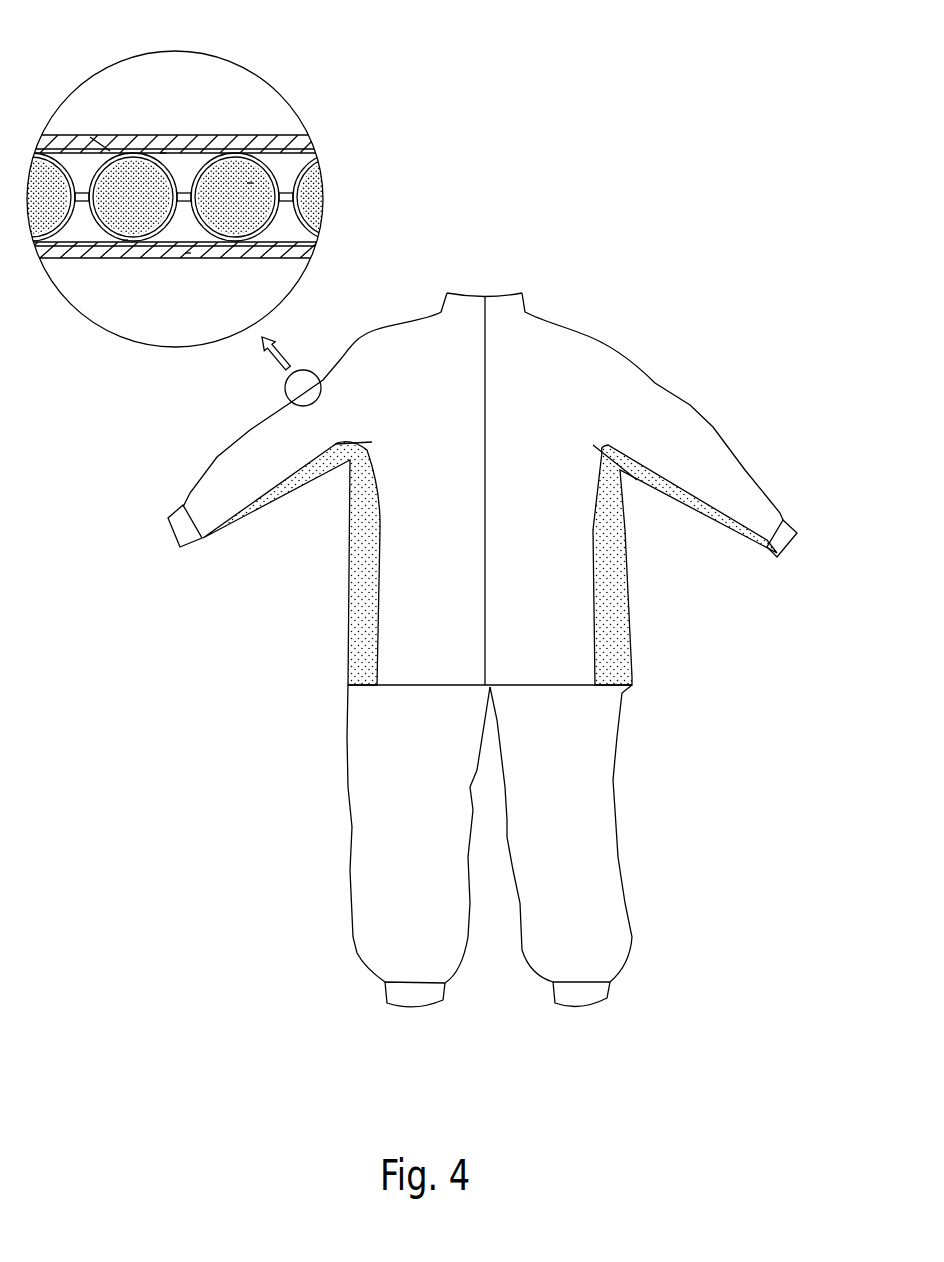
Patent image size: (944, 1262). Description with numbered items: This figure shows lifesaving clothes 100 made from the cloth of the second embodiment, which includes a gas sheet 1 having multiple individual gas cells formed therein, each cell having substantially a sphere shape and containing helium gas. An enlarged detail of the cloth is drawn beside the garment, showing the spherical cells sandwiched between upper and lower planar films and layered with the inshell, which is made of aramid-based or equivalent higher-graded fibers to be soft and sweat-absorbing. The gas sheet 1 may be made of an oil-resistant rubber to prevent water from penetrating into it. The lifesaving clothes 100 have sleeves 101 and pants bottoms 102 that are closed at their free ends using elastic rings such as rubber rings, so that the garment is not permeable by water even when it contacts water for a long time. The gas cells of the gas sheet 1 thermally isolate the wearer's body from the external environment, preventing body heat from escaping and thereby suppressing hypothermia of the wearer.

The lifesaving clothes 100 is at (583, 333).
The sleeves 101 is at (178, 545).
The pants bottoms 102 is at (400, 998).
The gas sheet 1 is at (247, 137).